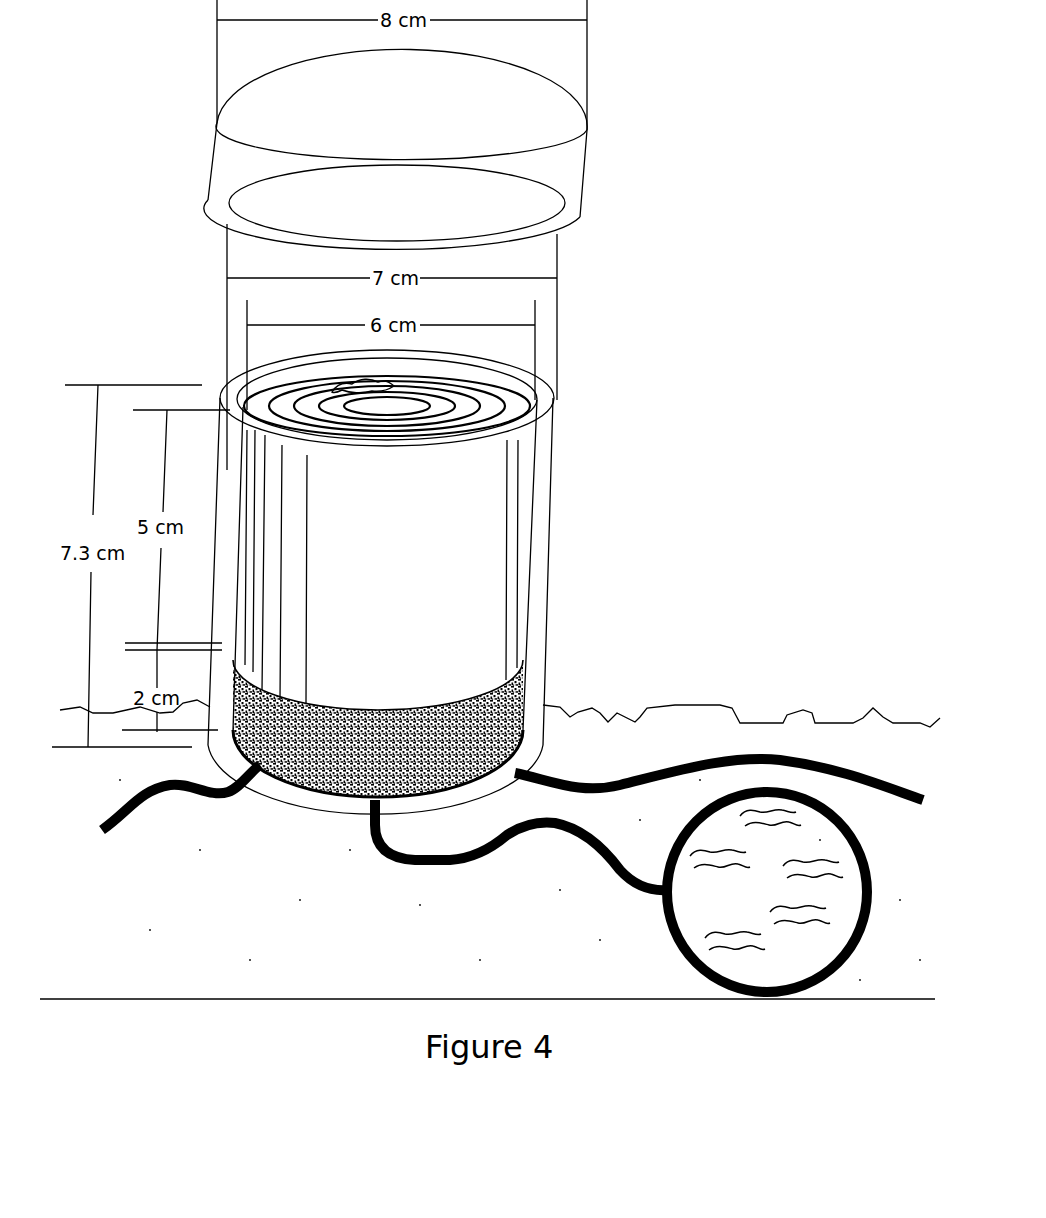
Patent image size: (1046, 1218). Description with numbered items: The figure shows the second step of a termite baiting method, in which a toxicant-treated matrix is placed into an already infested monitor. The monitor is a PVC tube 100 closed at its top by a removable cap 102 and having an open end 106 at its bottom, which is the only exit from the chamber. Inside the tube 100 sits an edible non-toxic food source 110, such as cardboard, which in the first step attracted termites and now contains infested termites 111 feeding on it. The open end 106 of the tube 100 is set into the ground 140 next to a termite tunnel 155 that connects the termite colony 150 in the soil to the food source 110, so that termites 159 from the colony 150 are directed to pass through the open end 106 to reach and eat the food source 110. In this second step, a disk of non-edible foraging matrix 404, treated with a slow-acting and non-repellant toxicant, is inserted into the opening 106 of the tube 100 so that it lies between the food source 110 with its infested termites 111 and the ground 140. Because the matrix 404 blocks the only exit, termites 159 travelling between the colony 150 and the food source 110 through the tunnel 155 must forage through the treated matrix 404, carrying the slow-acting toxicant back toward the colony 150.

The removable cap 102 is at (585, 167).
The PVC tube 100 is at (555, 493).
The open end 106 is at (548, 747).
The food source 110 is at (530, 583).
The disk of non-edible foraging matrix 404 is at (525, 693).
The infested termites 111 is at (397, 387).
The ground 140 is at (500, 710).
The termite tunnel 155 is at (512, 824).
The termite colony 150 is at (767, 892).
The termites 159 is at (833, 862).